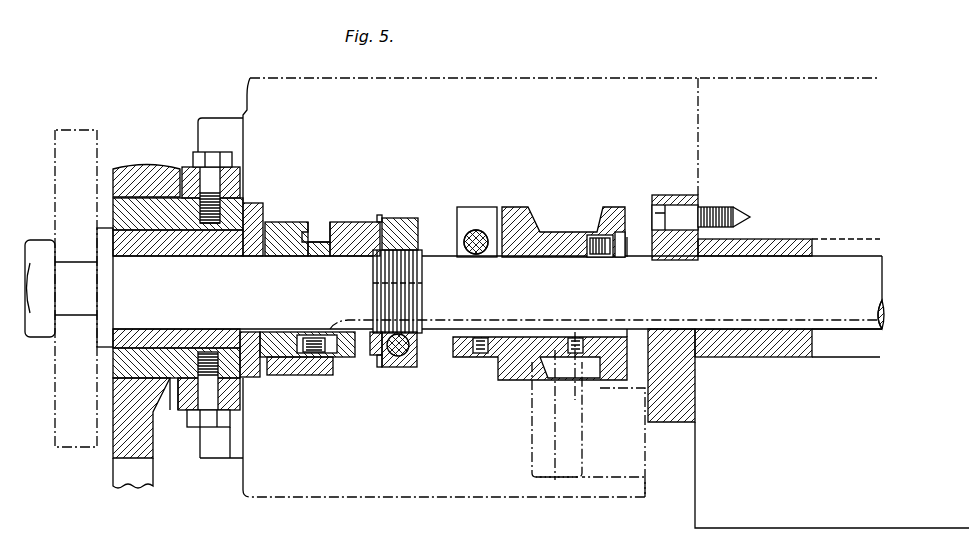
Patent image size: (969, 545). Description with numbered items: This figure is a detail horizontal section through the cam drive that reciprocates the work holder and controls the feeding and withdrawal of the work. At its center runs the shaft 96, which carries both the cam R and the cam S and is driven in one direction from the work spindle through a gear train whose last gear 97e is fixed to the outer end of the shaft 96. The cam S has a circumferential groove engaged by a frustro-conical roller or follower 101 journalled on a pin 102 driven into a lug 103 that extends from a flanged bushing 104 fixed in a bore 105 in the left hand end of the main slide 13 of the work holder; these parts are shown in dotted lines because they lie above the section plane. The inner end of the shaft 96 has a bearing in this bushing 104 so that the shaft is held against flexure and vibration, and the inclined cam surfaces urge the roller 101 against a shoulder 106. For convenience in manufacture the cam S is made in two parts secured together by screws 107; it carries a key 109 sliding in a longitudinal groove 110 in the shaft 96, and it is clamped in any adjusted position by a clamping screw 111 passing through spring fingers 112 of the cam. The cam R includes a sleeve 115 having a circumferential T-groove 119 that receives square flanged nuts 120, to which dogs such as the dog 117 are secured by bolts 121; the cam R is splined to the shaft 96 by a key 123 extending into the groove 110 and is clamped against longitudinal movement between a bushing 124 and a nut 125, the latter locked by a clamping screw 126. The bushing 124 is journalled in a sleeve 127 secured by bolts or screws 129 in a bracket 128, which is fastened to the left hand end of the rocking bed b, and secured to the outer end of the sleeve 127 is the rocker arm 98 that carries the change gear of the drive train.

The bracket 128 is at (185, 165).
The bushing 124 is at (253, 203).
The cam R is at (298, 222).
The circumferential T-groove 119 is at (316, 236).
The sleeve 115 is at (352, 236).
The rocking bed b is at (539, 287).
The spring fingers 112 is at (473, 230).
The clamping screw 111 is at (462, 207).
The nut 125 is at (400, 222).
The cam S is at (527, 207).
The screws 107 is at (633, 235).
The main slide 13 is at (832, 325).
The shaft 96 is at (498, 291).
The last gear 97e is at (68, 443).
The rocker arm 98 is at (132, 478).
The sleeve 127 is at (166, 368).
The bolts or screws 129 is at (208, 428).
The square flanged nuts 120 is at (280, 357).
The dog 117 is at (294, 364).
The bolts 121 is at (321, 362).
The key 123 is at (366, 357).
The clamping screw 126 is at (407, 367).
The key 109 is at (512, 334).
The roller or follower 101 is at (547, 370).
The shoulder 106 is at (585, 382).
The lug 103 is at (532, 452).
The pin 102 is at (563, 478).
The flanged bushing 104 is at (752, 357).
The longitudinal groove 110 is at (787, 325).
The bore 105 is at (838, 342).